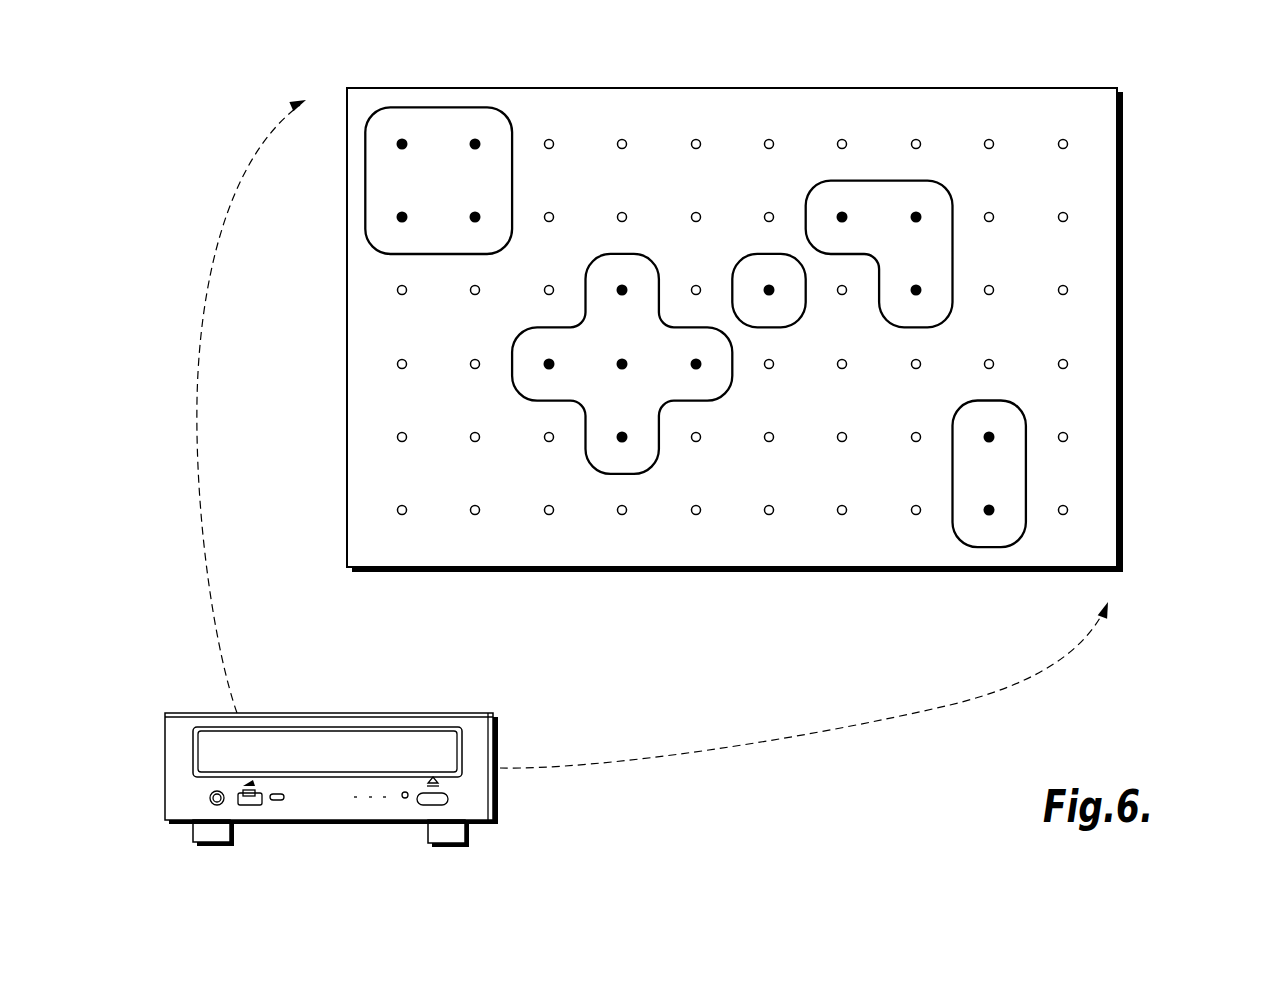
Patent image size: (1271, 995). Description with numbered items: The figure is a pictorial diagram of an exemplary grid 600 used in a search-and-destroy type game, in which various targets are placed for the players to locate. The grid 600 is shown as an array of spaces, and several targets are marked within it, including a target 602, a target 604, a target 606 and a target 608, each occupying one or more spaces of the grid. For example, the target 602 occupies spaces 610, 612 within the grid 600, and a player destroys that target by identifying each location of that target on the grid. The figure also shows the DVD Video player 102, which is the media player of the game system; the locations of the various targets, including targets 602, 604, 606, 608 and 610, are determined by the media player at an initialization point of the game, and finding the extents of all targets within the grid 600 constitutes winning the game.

The grid 600 is at (1098, 88).
The target 602 is at (1004, 398).
The target 604 is at (953, 197).
The target 606 is at (513, 358).
The target 608 is at (368, 221).
The space 610 is at (787, 327).
The space 612 is at (1004, 501).
The DVD Video player 102 is at (402, 712).